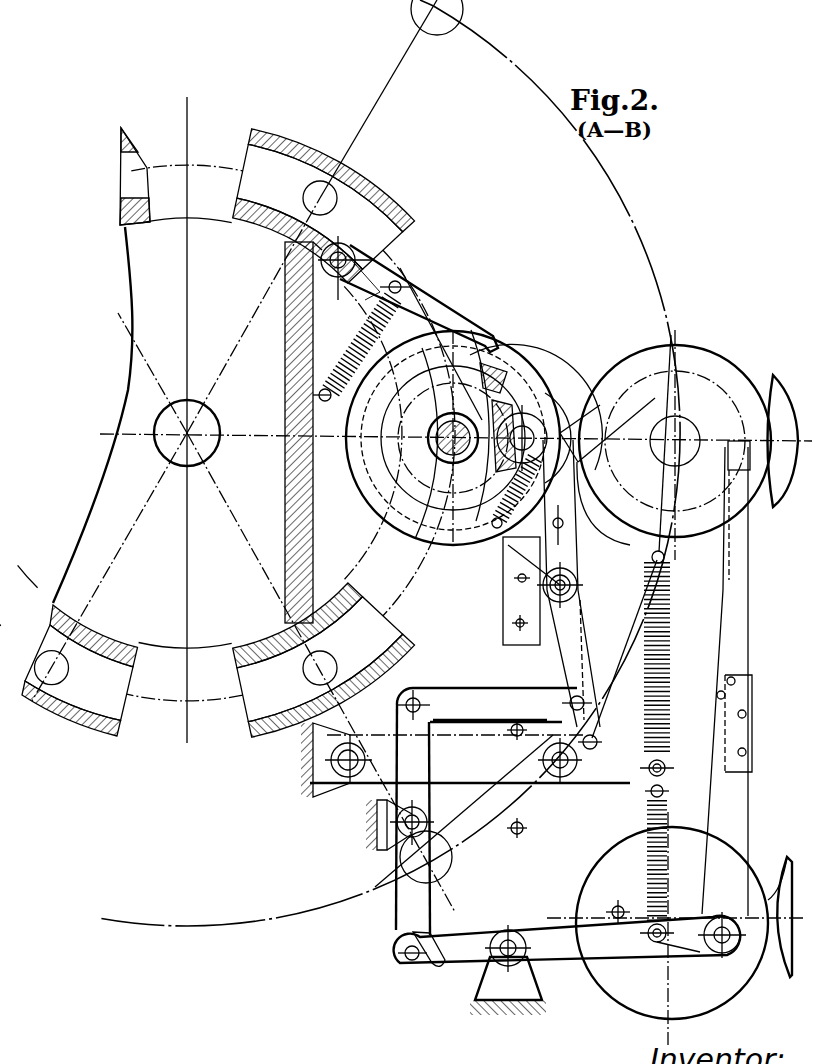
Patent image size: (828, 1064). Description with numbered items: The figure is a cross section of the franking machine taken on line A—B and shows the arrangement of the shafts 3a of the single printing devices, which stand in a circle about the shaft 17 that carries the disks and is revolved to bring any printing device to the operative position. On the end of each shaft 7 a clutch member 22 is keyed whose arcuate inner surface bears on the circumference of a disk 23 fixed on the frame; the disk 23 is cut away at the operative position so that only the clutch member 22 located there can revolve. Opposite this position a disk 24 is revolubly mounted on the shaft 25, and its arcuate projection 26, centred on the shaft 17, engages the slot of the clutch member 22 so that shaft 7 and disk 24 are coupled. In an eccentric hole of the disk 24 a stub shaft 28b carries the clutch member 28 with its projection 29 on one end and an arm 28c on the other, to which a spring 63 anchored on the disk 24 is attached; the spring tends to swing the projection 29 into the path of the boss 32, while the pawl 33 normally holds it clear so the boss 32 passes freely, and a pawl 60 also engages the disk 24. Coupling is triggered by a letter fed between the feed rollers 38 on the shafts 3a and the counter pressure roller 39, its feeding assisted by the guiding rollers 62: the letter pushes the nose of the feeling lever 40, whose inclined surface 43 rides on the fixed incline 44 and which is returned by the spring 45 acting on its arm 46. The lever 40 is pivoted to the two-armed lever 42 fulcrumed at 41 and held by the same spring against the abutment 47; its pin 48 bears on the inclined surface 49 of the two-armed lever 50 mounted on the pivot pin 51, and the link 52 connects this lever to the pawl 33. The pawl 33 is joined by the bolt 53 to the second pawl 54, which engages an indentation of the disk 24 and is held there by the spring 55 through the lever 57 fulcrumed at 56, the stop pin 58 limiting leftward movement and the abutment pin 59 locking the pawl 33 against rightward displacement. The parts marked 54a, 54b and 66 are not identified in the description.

The shaft 3a is at (685, 428).
The shaft 7 is at (312, 152).
The shaft 17 is at (165, 443).
The clutch member 22 is at (258, 184).
The disk 23 is at (325, 575).
The disk 24 is at (513, 367).
The shaft 25 is at (575, 390).
The arcuate projection 26 is at (458, 525).
The clutch member 28 is at (553, 410).
The stub shaft 28b is at (587, 373).
The arm 28c is at (601, 410).
The projection 29 is at (523, 400).
The boss 32 is at (495, 360).
The pawl 33 is at (565, 524).
The circular disk 38 is at (693, 388).
The counter pressure roller 39 is at (783, 412).
The feeling lever 40 is at (745, 466).
The fulcrum 41 is at (523, 923).
The two-armed lever 42 is at (612, 945).
The inclined surface 43 is at (718, 717).
The fixed incline 44 is at (753, 738).
The spring 45 is at (647, 900).
The arm 46 is at (683, 940).
The abutment 47 is at (617, 909).
The pin 48 is at (405, 953).
The inclined surface 49 is at (437, 960).
The two-armed lever 50 is at (403, 907).
The pivot pin 51 is at (383, 843).
The link 52 is at (443, 700).
The bolt 53 is at (572, 581).
The second pawl 54 is at (552, 660).
The plate 54a is at (538, 560).
The plate 54b is at (520, 578).
The spring 55 is at (664, 668).
The fulcrum 56 is at (308, 791).
The lever 57 is at (462, 763).
The stop pin 58 is at (515, 742).
The abutment pin 59 is at (598, 742).
The pawl 60 is at (413, 300).
The guiding roller 62 is at (724, 868).
The spring 63 is at (497, 528).
The pawl 66 is at (572, 450).